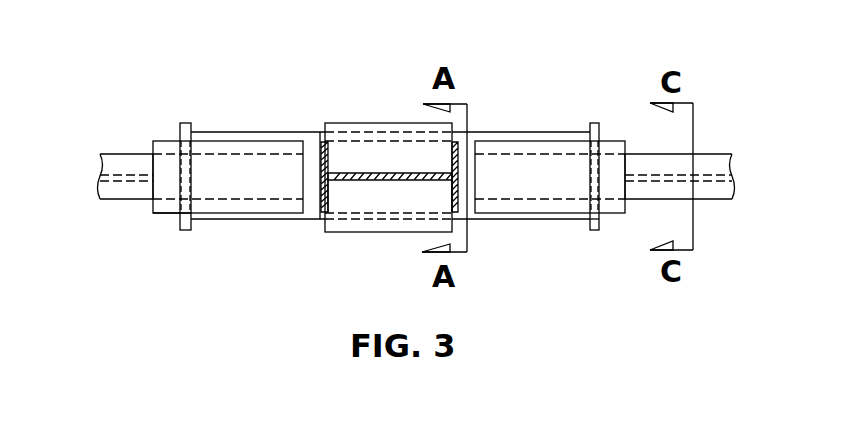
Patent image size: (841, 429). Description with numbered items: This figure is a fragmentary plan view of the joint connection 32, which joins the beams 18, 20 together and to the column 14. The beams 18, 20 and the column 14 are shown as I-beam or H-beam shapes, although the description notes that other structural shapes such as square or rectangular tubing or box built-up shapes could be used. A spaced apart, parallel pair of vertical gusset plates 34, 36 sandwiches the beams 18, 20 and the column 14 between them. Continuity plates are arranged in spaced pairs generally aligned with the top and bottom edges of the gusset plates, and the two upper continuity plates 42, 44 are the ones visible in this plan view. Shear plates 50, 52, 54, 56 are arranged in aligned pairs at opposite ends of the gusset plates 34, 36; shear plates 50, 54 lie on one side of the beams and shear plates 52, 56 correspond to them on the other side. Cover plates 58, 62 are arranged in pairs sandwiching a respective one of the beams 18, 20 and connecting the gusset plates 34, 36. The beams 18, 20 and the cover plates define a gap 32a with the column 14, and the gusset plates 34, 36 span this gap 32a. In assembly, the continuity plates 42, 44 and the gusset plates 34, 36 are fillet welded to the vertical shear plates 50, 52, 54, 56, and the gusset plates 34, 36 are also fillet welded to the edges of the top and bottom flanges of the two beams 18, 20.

The column 14 is at (340, 172).
The beam 18 is at (122, 163).
The beam 20 is at (715, 160).
The joint connection 32 is at (315, 77).
The gap 32a is at (317, 203).
The gusset plate 34 is at (245, 219).
The gusset plate 36 is at (517, 137).
The continuity plate 42 is at (390, 197).
The continuity plate 44 is at (360, 152).
The shear plate 50 is at (590, 224).
The shear plate 52 is at (600, 127).
The shear plate 54 is at (182, 229).
The shear plate 56 is at (183, 125).
The cover plate 58 is at (617, 180).
The cover plate 62 is at (165, 187).